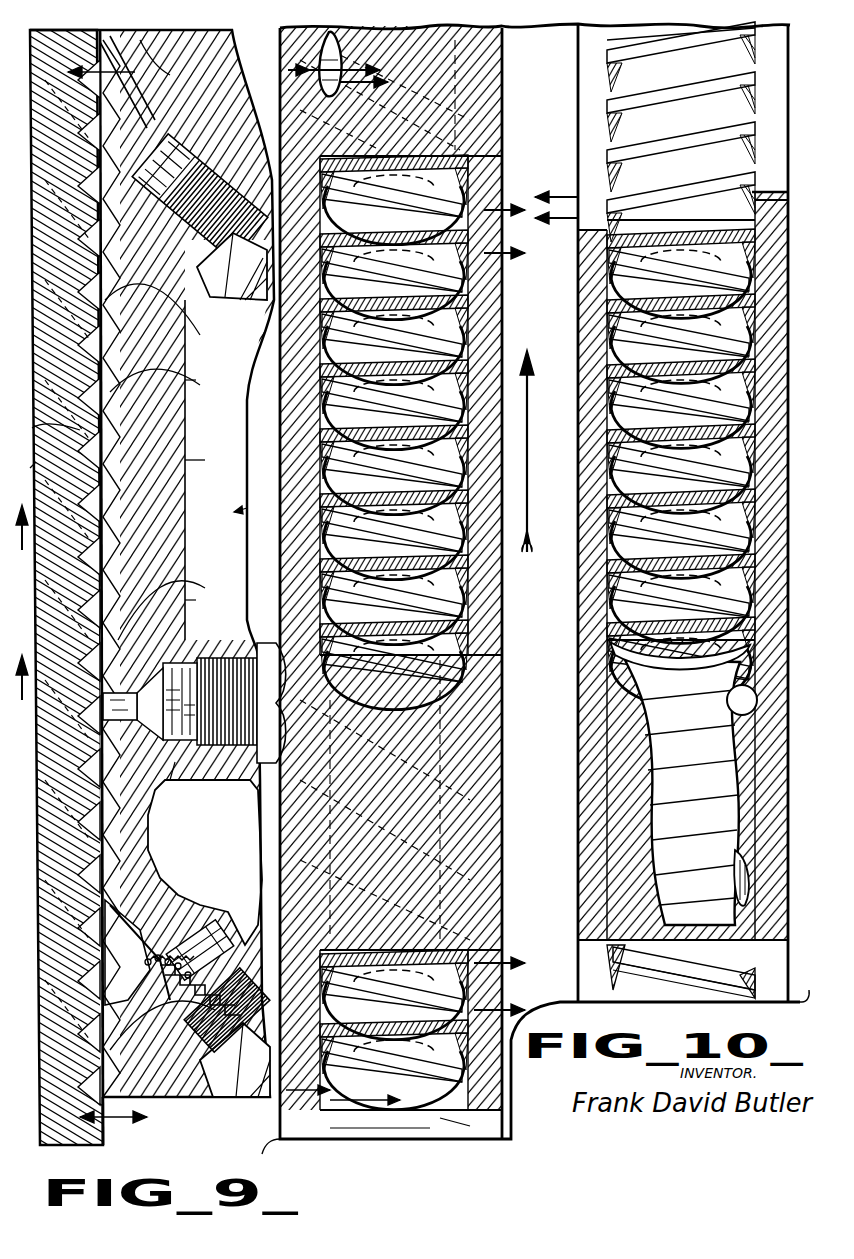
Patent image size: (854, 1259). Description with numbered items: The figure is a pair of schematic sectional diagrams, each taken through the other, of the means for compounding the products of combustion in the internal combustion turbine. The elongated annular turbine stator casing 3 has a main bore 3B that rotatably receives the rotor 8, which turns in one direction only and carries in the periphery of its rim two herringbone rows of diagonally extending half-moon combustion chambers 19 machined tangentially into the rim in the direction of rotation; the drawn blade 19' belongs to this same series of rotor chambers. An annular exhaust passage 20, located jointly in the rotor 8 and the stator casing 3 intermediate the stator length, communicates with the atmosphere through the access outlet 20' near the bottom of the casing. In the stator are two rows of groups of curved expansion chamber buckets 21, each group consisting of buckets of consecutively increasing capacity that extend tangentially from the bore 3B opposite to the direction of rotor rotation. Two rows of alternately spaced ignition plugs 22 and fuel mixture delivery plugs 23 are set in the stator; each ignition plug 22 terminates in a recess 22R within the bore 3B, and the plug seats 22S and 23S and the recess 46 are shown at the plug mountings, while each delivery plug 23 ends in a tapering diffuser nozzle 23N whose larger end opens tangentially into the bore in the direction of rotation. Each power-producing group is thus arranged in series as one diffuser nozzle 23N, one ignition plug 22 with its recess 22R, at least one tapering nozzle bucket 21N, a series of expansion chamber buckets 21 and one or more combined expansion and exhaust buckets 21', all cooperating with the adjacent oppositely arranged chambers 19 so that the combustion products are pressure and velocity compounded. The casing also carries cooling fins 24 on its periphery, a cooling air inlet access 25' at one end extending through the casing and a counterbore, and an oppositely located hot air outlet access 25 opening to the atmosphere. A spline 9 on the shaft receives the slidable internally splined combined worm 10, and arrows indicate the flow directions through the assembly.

In FIG. 9, the turbine stator casing 3 is at (201, 461).
In FIG. 10, the turbine stator casing 3 is at (578, 297).
In FIG. 9, the main bore 3B is at (201, 378).
In FIG. 9, the rotor 8 is at (38, 688).
In FIG. 10, the rotor 8 is at (578, 170).
In FIG. 10, the spline 9 is at (288, 72).
In FIG. 9, the combined worm 10 is at (128, 1128).
In FIG. 9, the combustion chambers 19 is at (45, 428).
In FIG. 10, the combustion chambers 19 is at (573, 592).
In FIG. 10, the cutter blade 19' is at (580, 139).
In FIG. 10, the exhaust passage 20 is at (676, 118).
In FIG. 10, the access outlet 20' is at (586, 981).
In FIG. 9, the expansion chamber buckets 21 is at (157, 699).
In FIG. 10, the expansion chamber buckets 21 is at (624, 463).
In FIG. 9, the combined expansion and exhaust buckets 21' is at (190, 987).
In FIG. 10, the combined expansion and exhaust buckets 21' is at (547, 592).
In FIG. 9, the tapering nozzle bucket 21N is at (205, 598).
In FIG. 10, the tapering nozzle bucket 21N is at (618, 636).
In FIG. 9, the ignition plugs 22 is at (220, 762).
In FIG. 9, the recess 22R is at (128, 720).
In FIG. 10, the recess 22R is at (726, 704).
In FIG. 9, the bolt seat 22S is at (182, 783).
In FIG. 9, the fuel mixture delivery plugs 23 is at (216, 286).
In FIG. 9, the tapering diffuser nozzle 23N is at (140, 40).
In FIG. 10, the tapering diffuser nozzle 23N is at (735, 862).
In FIG. 9, the nut seat 23S is at (196, 900).
In FIG. 9, the cooling fins 24 is at (252, 511).
In FIG. 10, the hot air outlet access 25 is at (790, 1005).
In FIG. 10, the cooling air inlet access 25' is at (286, 1150).
In FIG. 9, the recess 46 is at (244, 935).